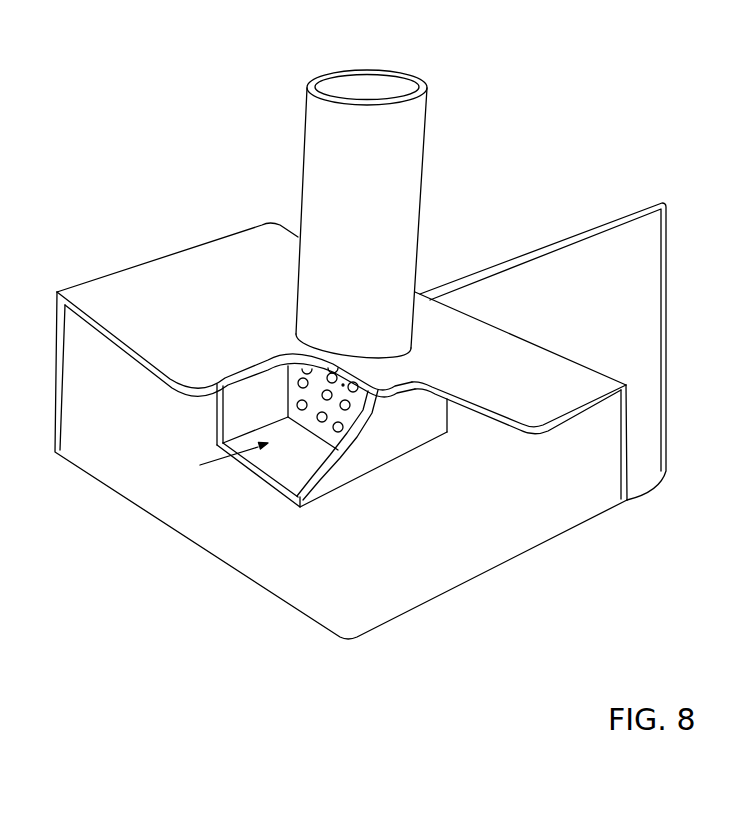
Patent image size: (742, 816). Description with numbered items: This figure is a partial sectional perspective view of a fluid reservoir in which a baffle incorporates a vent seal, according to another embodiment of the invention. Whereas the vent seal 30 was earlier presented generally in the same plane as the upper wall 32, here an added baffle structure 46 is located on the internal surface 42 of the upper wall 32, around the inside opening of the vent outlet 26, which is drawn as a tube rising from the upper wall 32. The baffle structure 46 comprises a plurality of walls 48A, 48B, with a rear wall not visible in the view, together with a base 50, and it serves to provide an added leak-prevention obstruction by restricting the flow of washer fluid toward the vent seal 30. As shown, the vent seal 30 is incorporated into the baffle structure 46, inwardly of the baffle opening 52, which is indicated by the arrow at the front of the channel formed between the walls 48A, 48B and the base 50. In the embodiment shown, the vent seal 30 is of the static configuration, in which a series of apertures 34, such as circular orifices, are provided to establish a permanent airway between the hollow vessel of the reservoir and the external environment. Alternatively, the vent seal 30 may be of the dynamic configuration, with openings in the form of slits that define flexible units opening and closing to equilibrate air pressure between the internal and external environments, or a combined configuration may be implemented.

The vent outlet 26 is at (363, 187).
The upper wall 32 is at (178, 287).
The vent seal 30 is at (282, 378).
The apertures 34 is at (357, 383).
The internal surface 42 is at (467, 413).
The baffle structure 46 is at (395, 440).
The wall 48A is at (435, 428).
The wall 48B is at (243, 392).
The base 50 is at (295, 467).
The baffle opening 52 is at (200, 465).